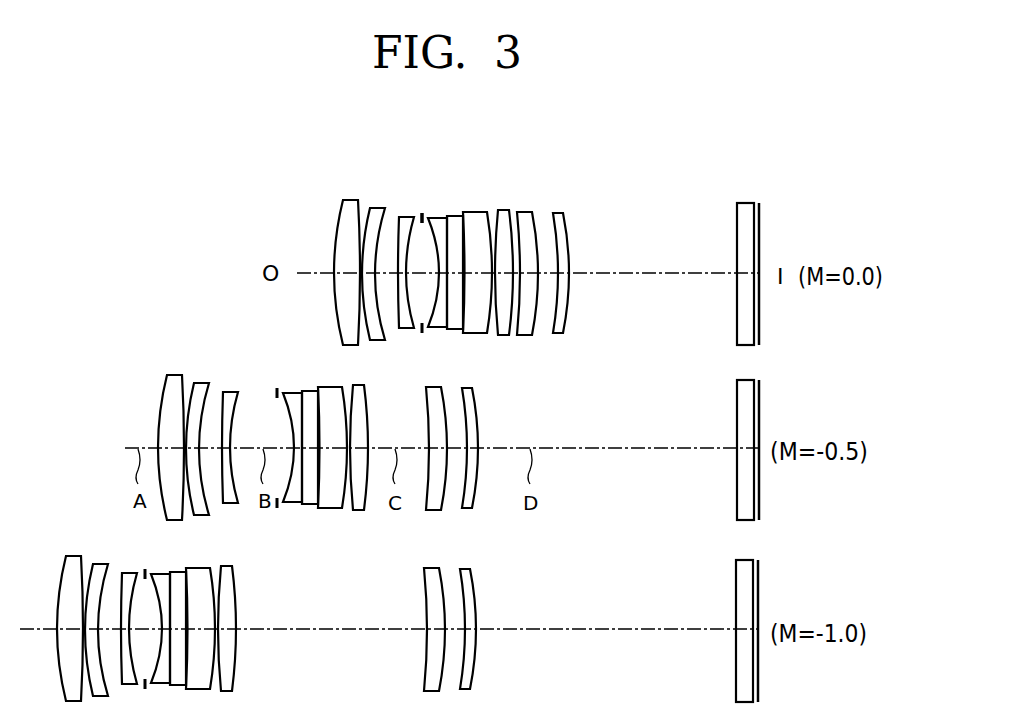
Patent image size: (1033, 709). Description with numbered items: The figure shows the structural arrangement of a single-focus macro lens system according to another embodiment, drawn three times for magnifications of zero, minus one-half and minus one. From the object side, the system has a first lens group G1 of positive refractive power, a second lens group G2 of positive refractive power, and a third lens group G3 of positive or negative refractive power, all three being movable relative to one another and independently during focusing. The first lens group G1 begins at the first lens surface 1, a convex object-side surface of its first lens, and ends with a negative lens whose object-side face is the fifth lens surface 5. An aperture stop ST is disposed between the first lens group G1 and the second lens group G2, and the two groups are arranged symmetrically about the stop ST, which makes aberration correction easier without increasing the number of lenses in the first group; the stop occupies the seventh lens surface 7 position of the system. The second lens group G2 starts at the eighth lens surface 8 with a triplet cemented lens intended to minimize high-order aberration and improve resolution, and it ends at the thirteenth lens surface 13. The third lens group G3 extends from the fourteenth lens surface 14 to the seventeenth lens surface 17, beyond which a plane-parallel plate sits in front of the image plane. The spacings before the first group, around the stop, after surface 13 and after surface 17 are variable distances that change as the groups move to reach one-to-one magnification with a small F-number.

The first lens surface 1 is at (336, 206).
The fifth lens surface 5 is at (409, 216).
The seventh lens surface 7 is at (422, 212).
The eighth lens surface 8 is at (436, 218).
The thirteenth lens surface 13 is at (505, 210).
The fourteenth lens surface 14 is at (522, 212).
The seventeenth lens surface 17 is at (570, 216).
The aperture stop ST is at (422, 332).
The first lens group G1 is at (416, 151).
The second lens group G2 is at (503, 151).
The third lens group G3 is at (570, 151).